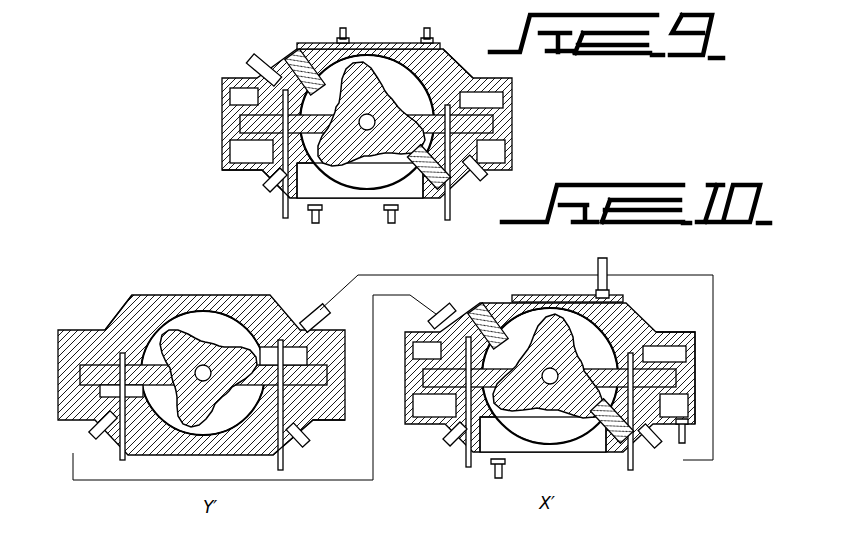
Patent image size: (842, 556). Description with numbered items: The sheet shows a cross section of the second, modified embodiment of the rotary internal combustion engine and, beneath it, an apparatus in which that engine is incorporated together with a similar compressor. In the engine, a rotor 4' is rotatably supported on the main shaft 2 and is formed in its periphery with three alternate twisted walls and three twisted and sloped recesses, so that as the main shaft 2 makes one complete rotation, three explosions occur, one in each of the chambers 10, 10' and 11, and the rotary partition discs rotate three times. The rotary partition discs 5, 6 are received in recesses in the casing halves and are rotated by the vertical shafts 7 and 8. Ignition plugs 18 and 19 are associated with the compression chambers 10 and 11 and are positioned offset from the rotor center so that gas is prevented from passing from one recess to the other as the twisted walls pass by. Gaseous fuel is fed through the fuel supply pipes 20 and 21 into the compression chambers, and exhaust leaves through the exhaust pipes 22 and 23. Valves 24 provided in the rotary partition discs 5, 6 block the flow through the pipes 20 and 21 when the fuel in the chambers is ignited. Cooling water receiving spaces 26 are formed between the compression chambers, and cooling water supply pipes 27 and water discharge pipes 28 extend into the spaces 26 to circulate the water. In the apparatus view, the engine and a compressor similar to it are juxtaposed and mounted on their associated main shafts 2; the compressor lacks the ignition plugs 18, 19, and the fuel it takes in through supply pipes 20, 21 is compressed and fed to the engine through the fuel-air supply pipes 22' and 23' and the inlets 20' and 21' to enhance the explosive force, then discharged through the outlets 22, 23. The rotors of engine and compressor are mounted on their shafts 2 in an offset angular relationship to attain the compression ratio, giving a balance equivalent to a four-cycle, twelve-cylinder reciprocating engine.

In FIG. 9, the main shaft 2 is at (367, 110).
In FIG. 9, the rotor 4' is at (371, 152).
In FIG. 9, the rotary partition disc 5 is at (241, 196).
In FIG. 10, the rotary partition disc 5 is at (316, 429).
In FIG. 9, the rotary partition disc 6 is at (396, 116).
In FIG. 9, the vertical shaft 7 is at (265, 167).
In FIG. 9, the vertical shaft 8 is at (460, 171).
In FIG. 9, the compression chamber 10 is at (405, 122).
In FIG. 9, the compression chamber 10' is at (330, 57).
In FIG. 10, the compression chamber 10' is at (550, 291).
In FIG. 9, the compression chamber 11 is at (367, 211).
In FIG. 9, the ignition plug 18 is at (305, 51).
In FIG. 10, the ignition plug 18 is at (489, 297).
In FIG. 9, the ignition plug 19 is at (428, 196).
In FIG. 10, the ignition plug 19 is at (611, 456).
In FIG. 9, the fuel supply pipe 20 is at (497, 71).
In FIG. 10, the fuel supply pipe 20 is at (209, 311).
In FIG. 10, the inlet 20' is at (449, 290).
In FIG. 9, the fuel supply pipe 21 is at (261, 189).
In FIG. 10, the fuel supply pipe 21 is at (312, 446).
In FIG. 10, the inlet 21' is at (672, 457).
In FIG. 9, the exhaust pipe 22 is at (236, 66).
In FIG. 10, the exhaust pipe 22 is at (705, 378).
In FIG. 10, the fuel-air supply pipe 22' is at (411, 363).
In FIG. 9, the exhaust pipe 23 is at (487, 176).
In FIG. 10, the exhaust pipe 23 is at (436, 461).
In FIG. 10, the fuel-air supply pipe 23' is at (137, 467).
In FIG. 9, the valve 24 is at (371, 125).
In FIG. 9, the cooling water receiving space 26 is at (368, 132).
In FIG. 10, the cooling water receiving space 26 is at (562, 392).
In FIG. 9, the cooling water supply pipe 27 is at (333, 234).
In FIG. 10, the cooling water supply pipe 27 is at (624, 448).
In FIG. 9, the water discharge pipe 28 is at (401, 21).
In FIG. 10, the water discharge pipe 28 is at (615, 266).